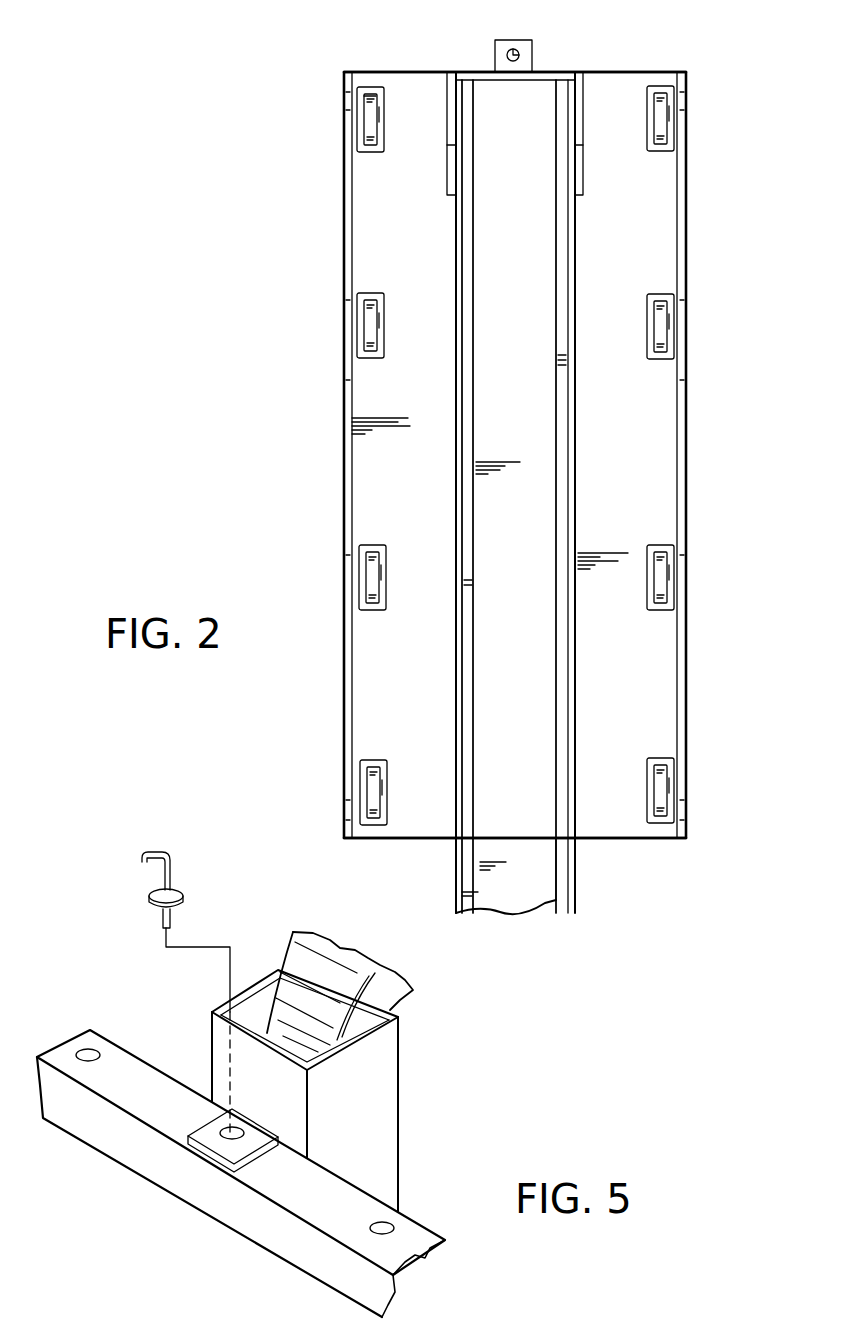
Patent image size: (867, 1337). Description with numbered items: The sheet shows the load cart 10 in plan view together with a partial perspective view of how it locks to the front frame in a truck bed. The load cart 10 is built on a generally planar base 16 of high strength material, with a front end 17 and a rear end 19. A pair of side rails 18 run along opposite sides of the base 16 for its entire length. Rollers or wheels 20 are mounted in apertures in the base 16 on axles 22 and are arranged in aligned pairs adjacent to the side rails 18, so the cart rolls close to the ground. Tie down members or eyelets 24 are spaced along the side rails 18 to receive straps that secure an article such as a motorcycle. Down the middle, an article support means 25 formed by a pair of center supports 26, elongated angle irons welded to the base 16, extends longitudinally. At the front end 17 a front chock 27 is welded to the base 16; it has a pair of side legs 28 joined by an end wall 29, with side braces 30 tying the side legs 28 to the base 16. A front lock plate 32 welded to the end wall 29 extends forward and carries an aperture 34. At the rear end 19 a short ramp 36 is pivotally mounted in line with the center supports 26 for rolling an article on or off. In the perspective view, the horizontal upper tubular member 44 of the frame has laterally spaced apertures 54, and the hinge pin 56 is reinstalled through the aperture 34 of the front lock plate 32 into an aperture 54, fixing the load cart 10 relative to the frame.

In FIG. 2, the load cart 10 is at (738, 470).
In FIG. 2, the base 16 is at (655, 641).
In FIG. 5, the base 16 is at (340, 992).
In FIG. 2, the front end 17 is at (373, 72).
In FIG. 2, the side rails 18 is at (344, 236).
In FIG. 2, the rear end 19 is at (658, 839).
In FIG. 2, the rollers or wheels 20 is at (365, 100).
In FIG. 2, the axles 22 is at (355, 125).
In FIG. 2, the tie down members or eyelets 24 is at (688, 92).
In FIG. 2, the article support means 25 is at (457, 392).
In FIG. 2, the center supports 26 is at (456, 490).
In FIG. 2, the front chock 27 is at (393, 69).
In FIG. 5, the front chock 27 is at (410, 1032).
In FIG. 2, the side legs 28 is at (446, 88).
In FIG. 5, the side legs 28 is at (249, 985).
In FIG. 2, the end wall 29 is at (553, 72).
In FIG. 5, the end wall 29 is at (298, 1089).
In FIG. 2, the side braces 30 is at (447, 180).
In FIG. 2, the front lock plate 32 is at (520, 38).
In FIG. 5, the front lock plate 32 is at (200, 1120).
In FIG. 2, the aperture 34 is at (528, 58).
In FIG. 5, the aperture 34 is at (232, 1140).
In FIG. 2, the short ramp 36 is at (545, 880).
In FIG. 5, the upper tubular member 44 is at (142, 1106).
In FIG. 5, the apertures 54 is at (88, 1052).
In FIG. 5, the hinge pin 56 is at (153, 866).